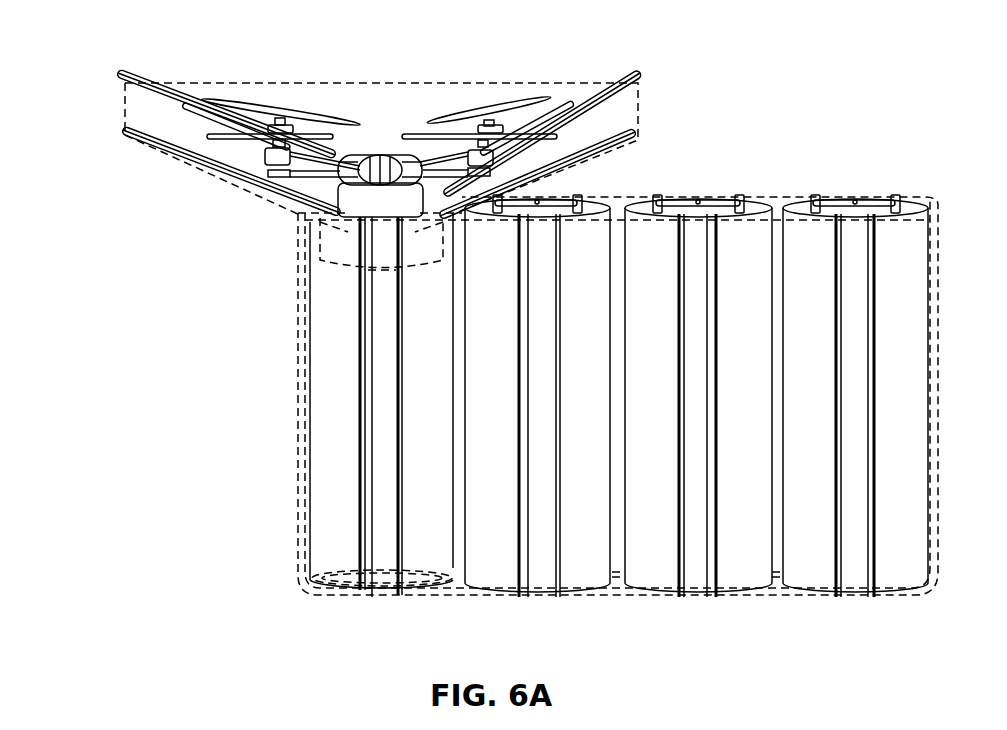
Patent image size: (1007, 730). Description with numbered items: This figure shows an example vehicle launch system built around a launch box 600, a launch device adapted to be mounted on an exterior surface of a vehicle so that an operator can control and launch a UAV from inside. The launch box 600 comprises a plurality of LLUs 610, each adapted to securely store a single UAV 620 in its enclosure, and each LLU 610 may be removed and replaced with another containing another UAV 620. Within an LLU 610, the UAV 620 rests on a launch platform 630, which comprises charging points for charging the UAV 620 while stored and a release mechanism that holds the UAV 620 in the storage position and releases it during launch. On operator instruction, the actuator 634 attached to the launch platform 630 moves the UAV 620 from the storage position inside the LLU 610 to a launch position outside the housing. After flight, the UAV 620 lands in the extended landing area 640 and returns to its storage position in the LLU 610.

The launch box 600 is at (120, 103).
The LLU 610 is at (593, 199).
The UAV 620 is at (402, 108).
The launch platform 630 is at (328, 247).
The actuator 634 is at (387, 582).
The extended landing area 640 is at (228, 40).